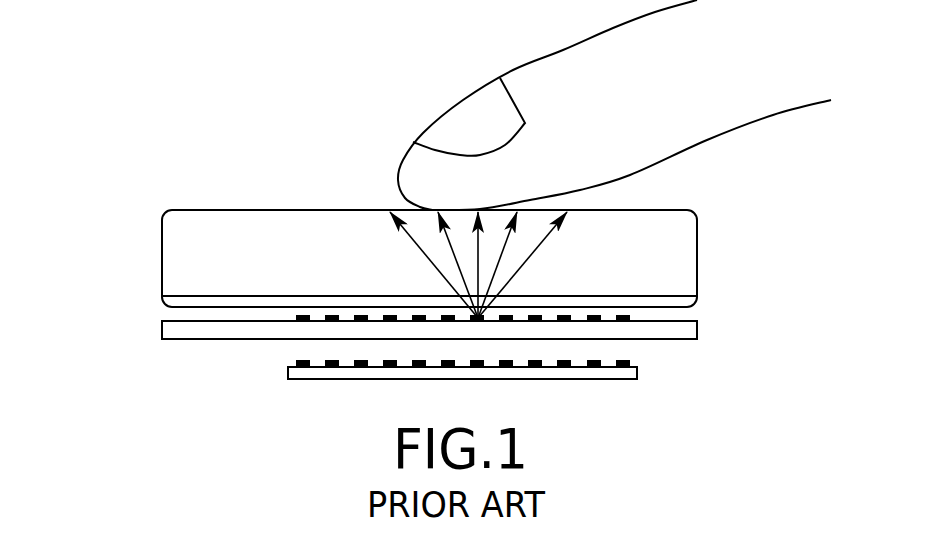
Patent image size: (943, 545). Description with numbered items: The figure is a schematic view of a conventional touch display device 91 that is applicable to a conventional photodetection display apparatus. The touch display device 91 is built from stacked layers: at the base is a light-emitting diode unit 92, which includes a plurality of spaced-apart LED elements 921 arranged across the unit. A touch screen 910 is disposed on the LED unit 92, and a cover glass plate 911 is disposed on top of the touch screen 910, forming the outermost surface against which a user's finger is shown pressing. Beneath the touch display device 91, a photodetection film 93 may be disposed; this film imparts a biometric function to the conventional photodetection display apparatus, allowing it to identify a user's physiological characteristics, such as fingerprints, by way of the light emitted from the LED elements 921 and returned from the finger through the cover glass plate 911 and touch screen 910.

The touch display device 91 is at (201, 193).
The cover glass plate 911 is at (178, 248).
The touch screen 910 is at (168, 303).
The light-emitting diode unit 92 is at (168, 328).
The LED elements 921 is at (682, 332).
The photodetection film 93 is at (633, 372).